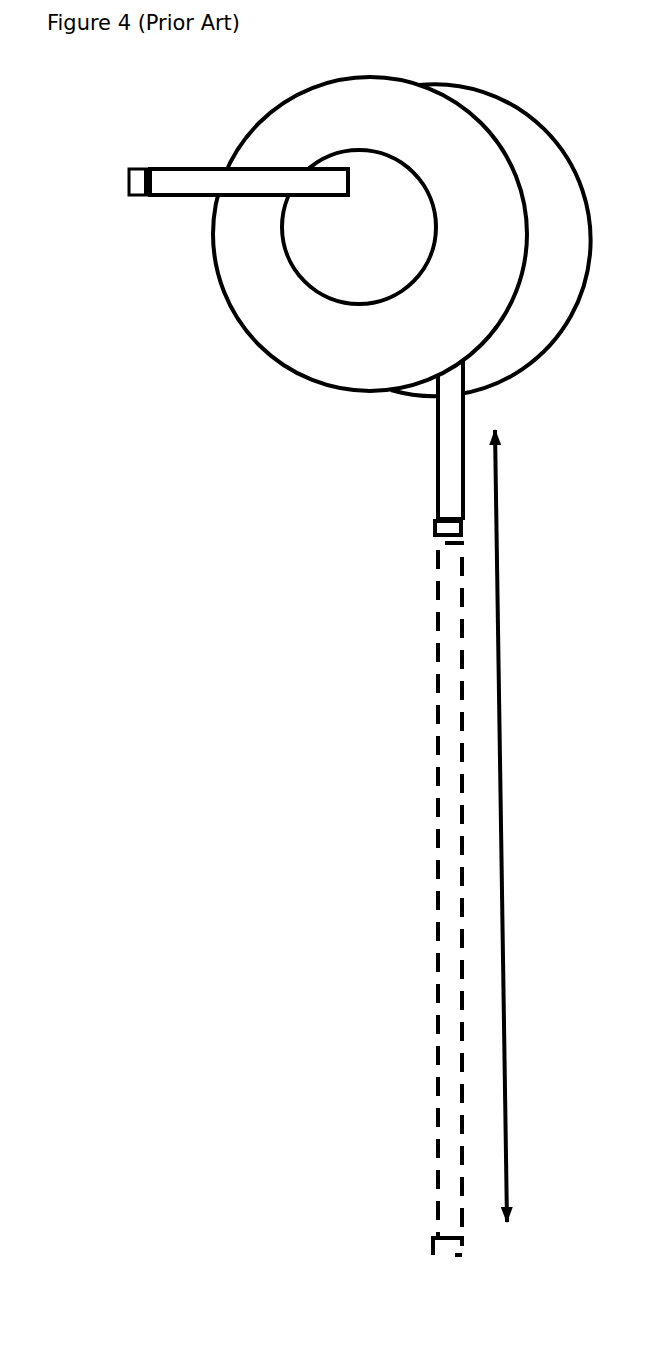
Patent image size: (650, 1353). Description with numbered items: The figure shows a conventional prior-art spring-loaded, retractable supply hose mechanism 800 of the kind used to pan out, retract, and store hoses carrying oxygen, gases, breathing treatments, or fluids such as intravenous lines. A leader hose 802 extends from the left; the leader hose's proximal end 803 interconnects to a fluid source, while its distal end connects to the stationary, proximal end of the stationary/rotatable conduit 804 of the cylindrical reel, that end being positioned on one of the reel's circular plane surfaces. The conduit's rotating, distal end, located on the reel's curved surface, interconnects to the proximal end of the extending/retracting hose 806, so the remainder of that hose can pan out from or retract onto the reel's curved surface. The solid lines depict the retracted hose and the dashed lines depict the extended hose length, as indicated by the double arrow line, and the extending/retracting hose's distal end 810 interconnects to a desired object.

The spring-loaded, retractable supply hose mechanism 800 is at (187, 100).
The leader hose 802 is at (183, 167).
The leader hose proximal end 803 is at (127, 192).
The stationary/rotatable conduit 804 is at (240, 245).
The extending/retracting hose 806 is at (438, 443).
The extending/retracting hose distal end 810 is at (433, 530).